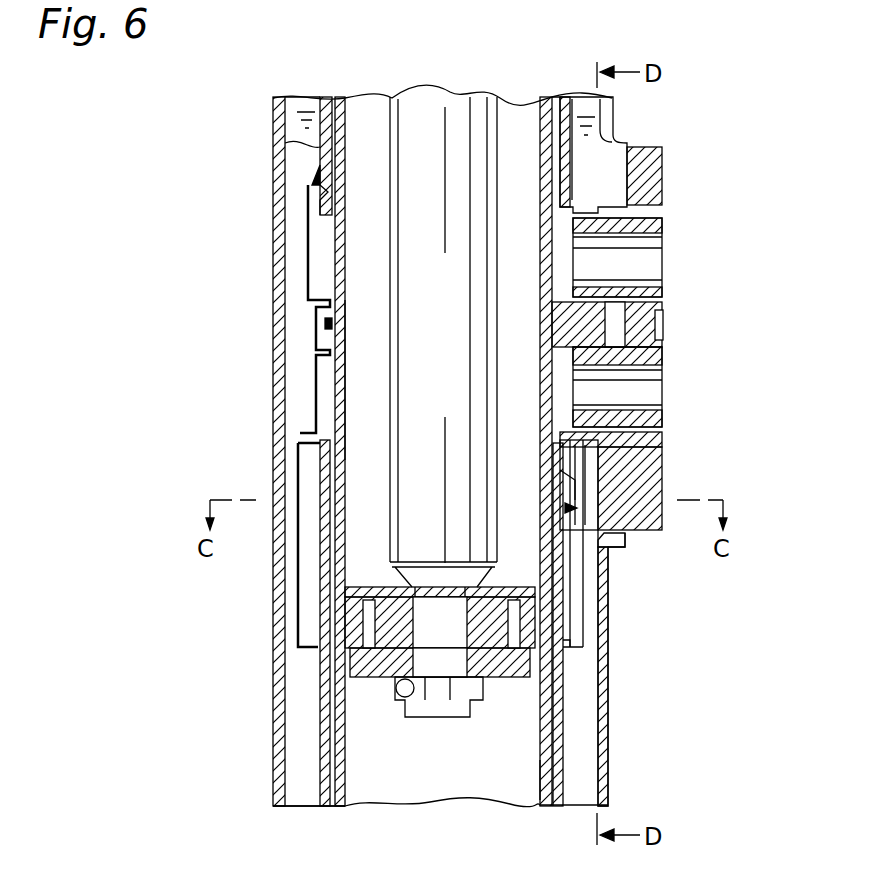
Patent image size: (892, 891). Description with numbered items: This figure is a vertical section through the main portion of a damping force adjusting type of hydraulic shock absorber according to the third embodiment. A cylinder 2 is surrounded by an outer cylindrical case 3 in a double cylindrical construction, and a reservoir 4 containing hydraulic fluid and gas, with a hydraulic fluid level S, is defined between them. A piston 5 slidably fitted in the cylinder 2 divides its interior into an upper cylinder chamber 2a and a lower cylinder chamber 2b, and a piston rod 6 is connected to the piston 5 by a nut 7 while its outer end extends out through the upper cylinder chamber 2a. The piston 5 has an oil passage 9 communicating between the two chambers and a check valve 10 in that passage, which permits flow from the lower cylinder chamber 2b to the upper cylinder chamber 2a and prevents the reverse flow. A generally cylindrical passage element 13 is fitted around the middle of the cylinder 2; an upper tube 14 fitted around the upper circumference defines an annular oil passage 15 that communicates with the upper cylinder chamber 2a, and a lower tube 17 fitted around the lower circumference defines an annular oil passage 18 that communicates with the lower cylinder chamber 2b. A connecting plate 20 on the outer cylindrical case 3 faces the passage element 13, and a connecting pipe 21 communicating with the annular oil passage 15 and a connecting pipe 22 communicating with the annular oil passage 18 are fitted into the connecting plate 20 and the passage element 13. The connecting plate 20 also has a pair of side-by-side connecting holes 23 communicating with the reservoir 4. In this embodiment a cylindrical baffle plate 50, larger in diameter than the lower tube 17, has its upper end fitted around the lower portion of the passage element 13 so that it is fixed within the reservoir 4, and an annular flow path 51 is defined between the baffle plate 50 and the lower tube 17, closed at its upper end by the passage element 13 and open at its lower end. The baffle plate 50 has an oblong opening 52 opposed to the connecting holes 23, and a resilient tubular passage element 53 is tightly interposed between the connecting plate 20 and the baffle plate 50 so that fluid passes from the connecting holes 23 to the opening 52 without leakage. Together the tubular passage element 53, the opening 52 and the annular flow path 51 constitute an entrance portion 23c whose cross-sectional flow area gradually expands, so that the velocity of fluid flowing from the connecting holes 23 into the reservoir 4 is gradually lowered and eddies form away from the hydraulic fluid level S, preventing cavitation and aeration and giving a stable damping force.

The hydraulic fluid level S is at (302, 102).
The cylinder 2 is at (340, 267).
The upper cylinder chamber 2a is at (358, 392).
The lower cylinder chamber 2b is at (542, 782).
The outer cylindrical case 3 is at (617, 120).
The reservoir 4 is at (292, 232).
The piston 5 is at (350, 612).
The piston rod 6 is at (418, 110).
The nut 7 is at (403, 680).
The oil passage 9 is at (360, 642).
The check valve 10 is at (350, 588).
The passage element 13 is at (320, 323).
The upper tube 14 is at (320, 147).
The annular oil passage 15 is at (330, 190).
The lower tube 17 is at (320, 755).
The annular oil passage 18 is at (283, 793).
The connecting plate 20 is at (653, 168).
The connecting pipe 21 is at (650, 212).
The connecting pipe 22 is at (647, 350).
The connecting hole 23 is at (667, 488).
The entrance portion 23c is at (570, 508).
The baffle plate 50 is at (583, 623).
The annular flow path 51 is at (570, 648).
The opening 52 is at (657, 445).
The tubular passage element 53 is at (610, 570).